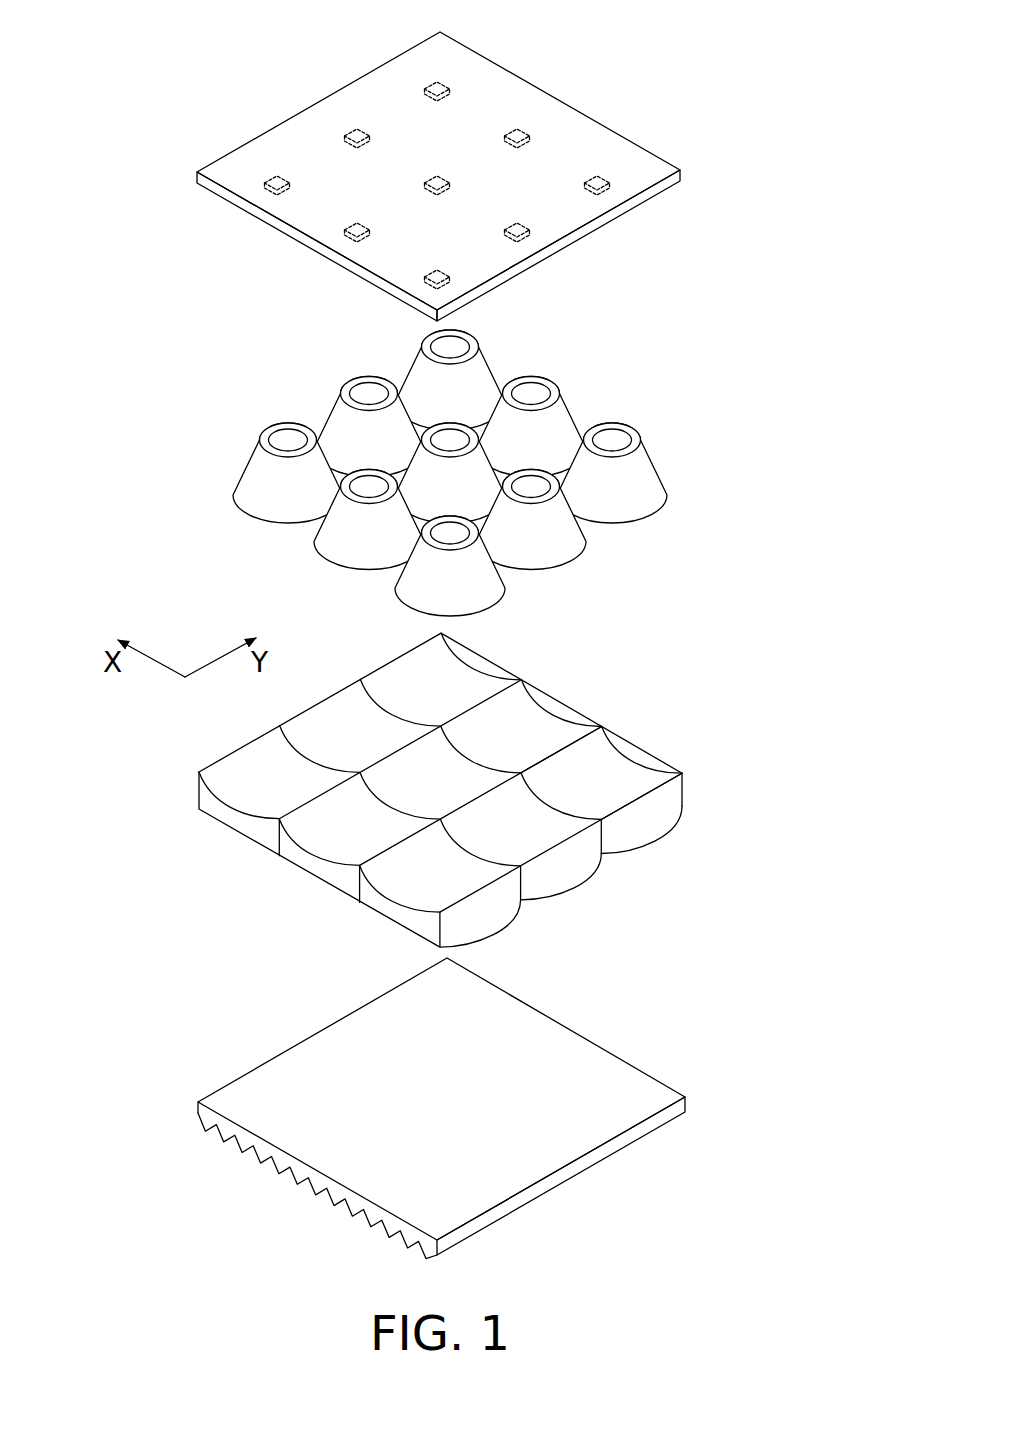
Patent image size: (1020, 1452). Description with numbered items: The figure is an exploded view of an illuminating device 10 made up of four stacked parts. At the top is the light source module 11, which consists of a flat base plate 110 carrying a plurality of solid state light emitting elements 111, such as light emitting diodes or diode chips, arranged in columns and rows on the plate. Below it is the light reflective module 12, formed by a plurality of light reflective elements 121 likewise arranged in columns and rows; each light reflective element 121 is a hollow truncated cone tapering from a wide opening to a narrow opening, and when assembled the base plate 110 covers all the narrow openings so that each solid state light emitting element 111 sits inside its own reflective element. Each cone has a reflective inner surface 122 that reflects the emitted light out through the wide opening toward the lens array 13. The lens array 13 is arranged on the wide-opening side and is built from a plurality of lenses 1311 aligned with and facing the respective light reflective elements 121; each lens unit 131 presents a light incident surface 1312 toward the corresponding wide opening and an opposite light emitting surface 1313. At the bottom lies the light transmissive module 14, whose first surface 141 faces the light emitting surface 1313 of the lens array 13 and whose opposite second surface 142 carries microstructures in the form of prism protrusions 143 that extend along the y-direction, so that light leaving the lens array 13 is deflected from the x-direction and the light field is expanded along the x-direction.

The illuminating device 10 is at (170, 58).
The light source module 11 is at (473, 176).
The base plate 110 is at (644, 164).
The solid state light emitting elements 111 is at (608, 184).
The light reflective module 12 is at (491, 471).
The light reflective elements 121 is at (640, 474).
The reflective inner surface 122 is at (611, 441).
The lens array 13 is at (499, 789).
The lens unit 131 is at (613, 761).
The lenses 1311 is at (683, 788).
The light incident surface 1312 is at (636, 783).
The light emitting surface 1313 is at (660, 838).
The light transmissive module 14 is at (451, 1108).
The first surface 141 is at (581, 1085).
The second surface 142 is at (533, 1204).
The prism protrusions 143 is at (300, 1180).